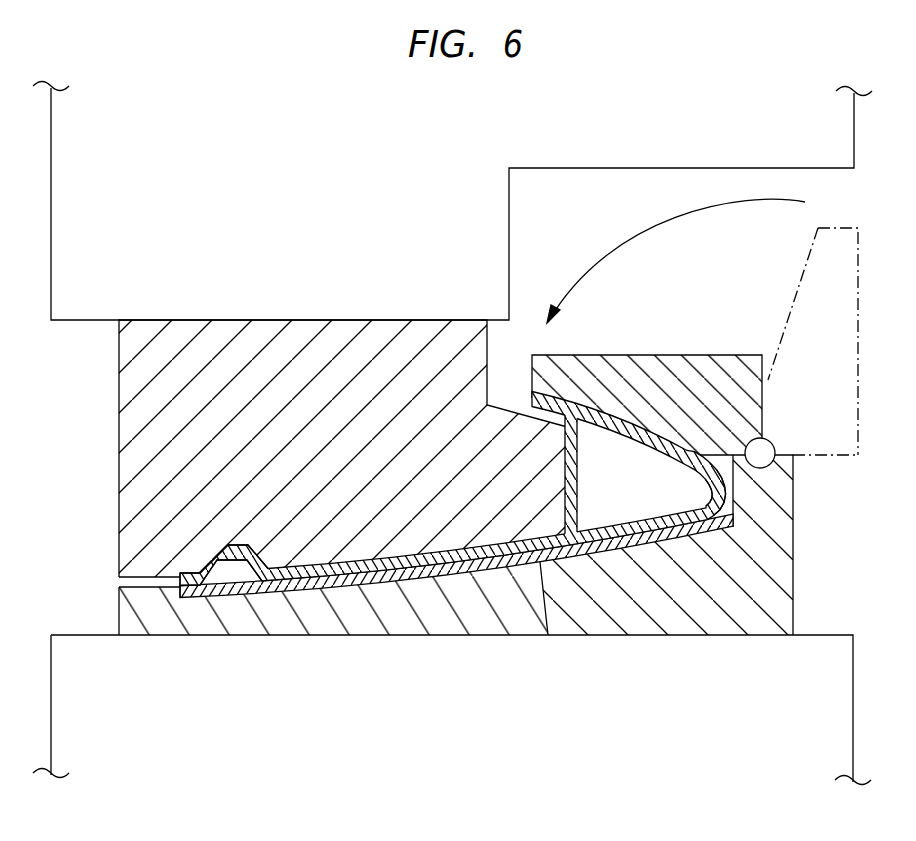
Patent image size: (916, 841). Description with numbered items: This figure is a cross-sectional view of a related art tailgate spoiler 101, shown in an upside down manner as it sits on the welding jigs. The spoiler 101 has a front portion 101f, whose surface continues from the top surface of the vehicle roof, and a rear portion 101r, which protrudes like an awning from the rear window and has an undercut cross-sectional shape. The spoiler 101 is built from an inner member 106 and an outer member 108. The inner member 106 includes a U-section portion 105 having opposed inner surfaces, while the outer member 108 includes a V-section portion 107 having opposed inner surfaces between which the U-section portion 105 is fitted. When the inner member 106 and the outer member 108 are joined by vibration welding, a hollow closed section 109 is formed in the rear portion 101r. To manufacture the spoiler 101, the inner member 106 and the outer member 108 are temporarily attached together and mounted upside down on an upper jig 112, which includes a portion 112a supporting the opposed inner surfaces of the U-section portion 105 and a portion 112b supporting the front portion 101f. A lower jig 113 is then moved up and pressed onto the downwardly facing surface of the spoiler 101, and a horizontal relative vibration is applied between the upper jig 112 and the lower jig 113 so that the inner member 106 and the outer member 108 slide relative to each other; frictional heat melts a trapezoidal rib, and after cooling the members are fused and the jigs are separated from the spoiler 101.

The spoiler 101 is at (442, 588).
The front portion 101f is at (272, 600).
The rear portion 101r is at (682, 442).
The U-section portion 105 is at (561, 486).
The inner member 106 is at (333, 563).
The V-section portion 107 is at (670, 506).
The outer member 108 is at (412, 587).
The hollow closed section 109 is at (621, 468).
The upper jig 112 is at (437, 178).
The portion supporting the U-section portion 112a is at (511, 476).
The portion supporting the front portion 112b is at (284, 357).
The lower jig 113 is at (782, 541).